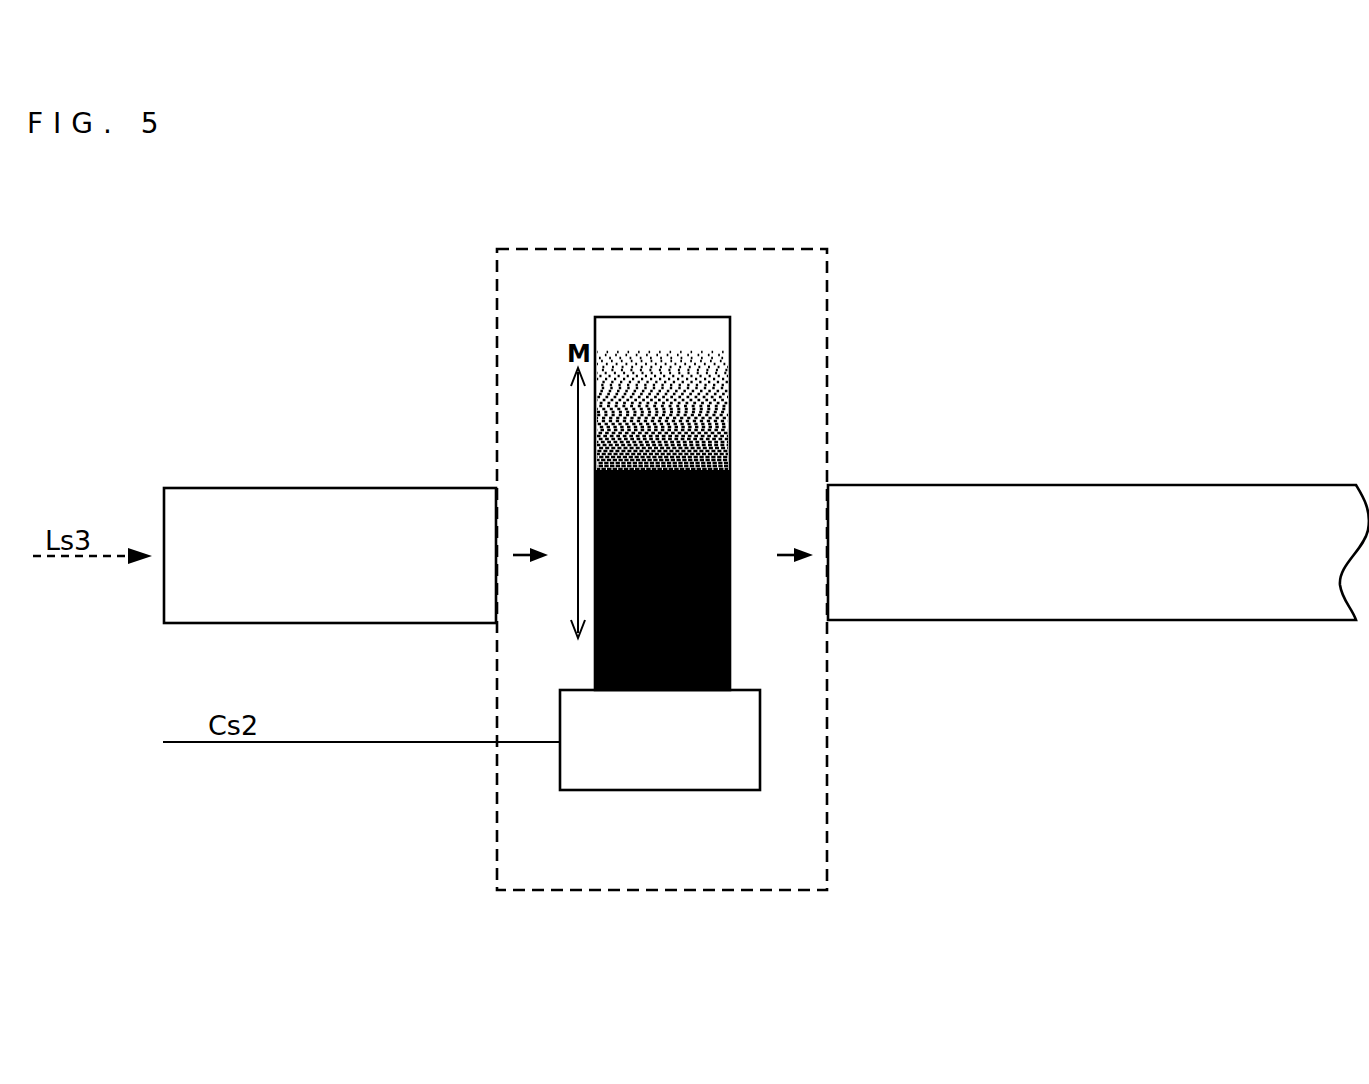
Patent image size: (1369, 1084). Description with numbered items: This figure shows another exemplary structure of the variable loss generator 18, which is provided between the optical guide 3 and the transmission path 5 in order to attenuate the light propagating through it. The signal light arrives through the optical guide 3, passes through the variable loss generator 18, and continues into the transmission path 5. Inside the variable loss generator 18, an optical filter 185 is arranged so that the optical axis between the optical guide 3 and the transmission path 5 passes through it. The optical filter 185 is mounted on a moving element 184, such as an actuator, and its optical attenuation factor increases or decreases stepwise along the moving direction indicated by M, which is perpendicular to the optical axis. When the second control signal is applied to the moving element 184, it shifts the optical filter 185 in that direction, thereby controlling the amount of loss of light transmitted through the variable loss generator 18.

The variable loss generator 18 is at (665, 249).
The optical filter 185 is at (731, 402).
The moving element 184 is at (655, 791).
The optical guide 3 is at (333, 487).
The transmission path 5 is at (1097, 485).